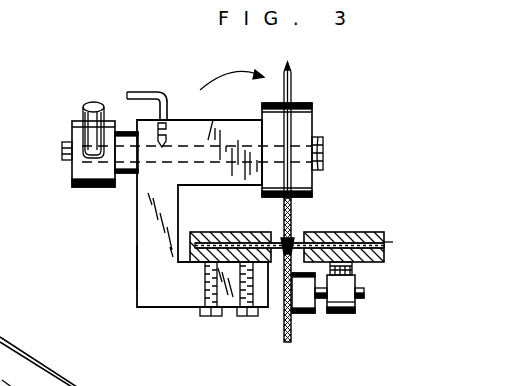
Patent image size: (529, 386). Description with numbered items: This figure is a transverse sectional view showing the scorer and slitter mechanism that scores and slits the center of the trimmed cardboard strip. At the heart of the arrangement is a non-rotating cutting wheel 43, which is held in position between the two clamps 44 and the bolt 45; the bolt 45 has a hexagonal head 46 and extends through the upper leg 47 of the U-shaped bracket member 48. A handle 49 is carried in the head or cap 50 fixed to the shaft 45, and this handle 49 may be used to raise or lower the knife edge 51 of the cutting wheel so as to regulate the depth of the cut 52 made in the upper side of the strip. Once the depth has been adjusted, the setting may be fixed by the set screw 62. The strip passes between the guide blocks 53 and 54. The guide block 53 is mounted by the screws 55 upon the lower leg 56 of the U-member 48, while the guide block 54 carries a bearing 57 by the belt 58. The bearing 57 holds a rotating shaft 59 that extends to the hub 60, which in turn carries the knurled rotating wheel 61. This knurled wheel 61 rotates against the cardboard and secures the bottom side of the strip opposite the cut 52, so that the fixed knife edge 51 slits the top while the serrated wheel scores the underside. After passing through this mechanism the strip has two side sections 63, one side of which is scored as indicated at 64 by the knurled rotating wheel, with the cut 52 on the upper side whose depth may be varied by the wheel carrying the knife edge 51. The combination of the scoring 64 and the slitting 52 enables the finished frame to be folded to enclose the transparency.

The non-rotating cutting wheel 43 is at (292, 88).
The clamps 44 is at (310, 115).
The bolt 45 is at (217, 115).
The hexagonal head 46 is at (318, 156).
The upper leg 47 is at (144, 192).
The U-shaped bracket member 48 is at (146, 250).
The handle 49 is at (100, 93).
The head or cap 50 is at (73, 183).
The knife edge 51 is at (287, 66).
The cut 52 is at (292, 237).
The guide block 53 is at (244, 232).
The guide block 54 is at (377, 232).
The screws 55 is at (240, 313).
The lower leg 56 is at (170, 301).
The bearing 57 is at (339, 316).
The belt 58 is at (354, 276).
The rotating shaft 59 is at (362, 297).
The hub 60 is at (301, 317).
The knurled rotating wheel 61 is at (288, 340).
The set screw 62 is at (163, 92).
The side sections 63 is at (13, 361).
The scoring 64 is at (283, 243).